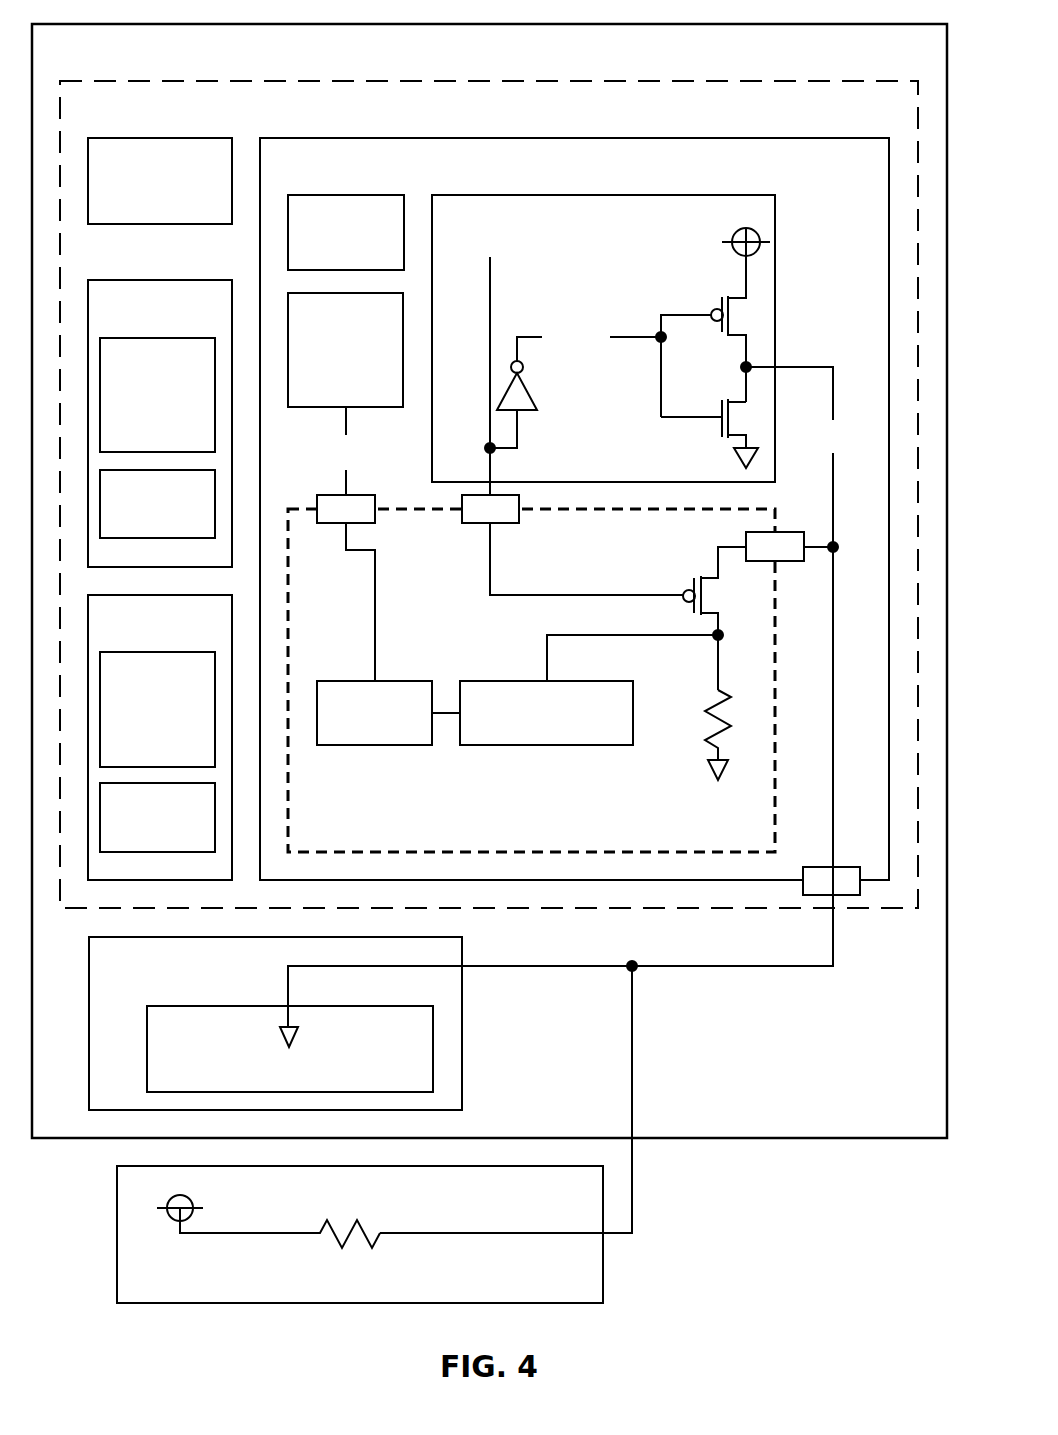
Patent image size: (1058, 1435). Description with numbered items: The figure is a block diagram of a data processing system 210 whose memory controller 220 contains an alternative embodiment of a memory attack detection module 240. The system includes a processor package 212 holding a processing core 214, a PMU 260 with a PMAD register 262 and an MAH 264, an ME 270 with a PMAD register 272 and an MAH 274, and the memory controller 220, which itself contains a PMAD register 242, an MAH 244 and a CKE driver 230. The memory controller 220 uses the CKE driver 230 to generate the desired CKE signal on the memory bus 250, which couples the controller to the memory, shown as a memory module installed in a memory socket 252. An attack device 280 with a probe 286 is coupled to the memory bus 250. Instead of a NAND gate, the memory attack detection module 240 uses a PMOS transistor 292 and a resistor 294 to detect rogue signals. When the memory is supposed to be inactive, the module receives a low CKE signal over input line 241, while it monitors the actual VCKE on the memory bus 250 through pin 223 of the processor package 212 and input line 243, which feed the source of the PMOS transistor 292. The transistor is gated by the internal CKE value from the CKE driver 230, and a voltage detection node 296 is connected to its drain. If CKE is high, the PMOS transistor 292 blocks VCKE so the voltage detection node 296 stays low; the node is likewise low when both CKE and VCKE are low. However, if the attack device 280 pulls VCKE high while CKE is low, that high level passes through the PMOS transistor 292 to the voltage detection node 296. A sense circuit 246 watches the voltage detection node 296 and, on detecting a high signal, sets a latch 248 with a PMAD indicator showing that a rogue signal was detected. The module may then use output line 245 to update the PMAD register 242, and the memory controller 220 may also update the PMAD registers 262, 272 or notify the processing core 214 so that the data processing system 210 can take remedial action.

The data processing system 210 is at (648, 56).
The processor package 212 is at (620, 112).
The processing core 214 is at (212, 207).
The memory controller 220 is at (697, 169).
The pin 223 is at (852, 892).
The CKE driver 230 is at (690, 224).
The memory attack detection module 240 is at (737, 844).
The input line 241 is at (510, 521).
The PMAD register 242 is at (365, 392).
The input line 243 is at (795, 559).
The MAH 244 is at (366, 261).
The output line 245 is at (365, 521).
The sense circuit 246 is at (567, 740).
The latch 248 is at (395, 740).
The memory bus 250 is at (135, 997).
The memory socket 252 is at (402, 1086).
The PMU 260 is at (213, 312).
The PMAD register 262 is at (177, 437).
The MAH 264 is at (177, 531).
The ME 270 is at (203, 626).
The PMAD register 272 is at (177, 751).
The MAH 274 is at (177, 844).
The attack device 280 is at (460, 1197).
The probe 286 is at (655, 1010).
The PMOS transistor 292 is at (668, 577).
The resistor 294 is at (688, 740).
The voltage detection node 296 is at (698, 650).